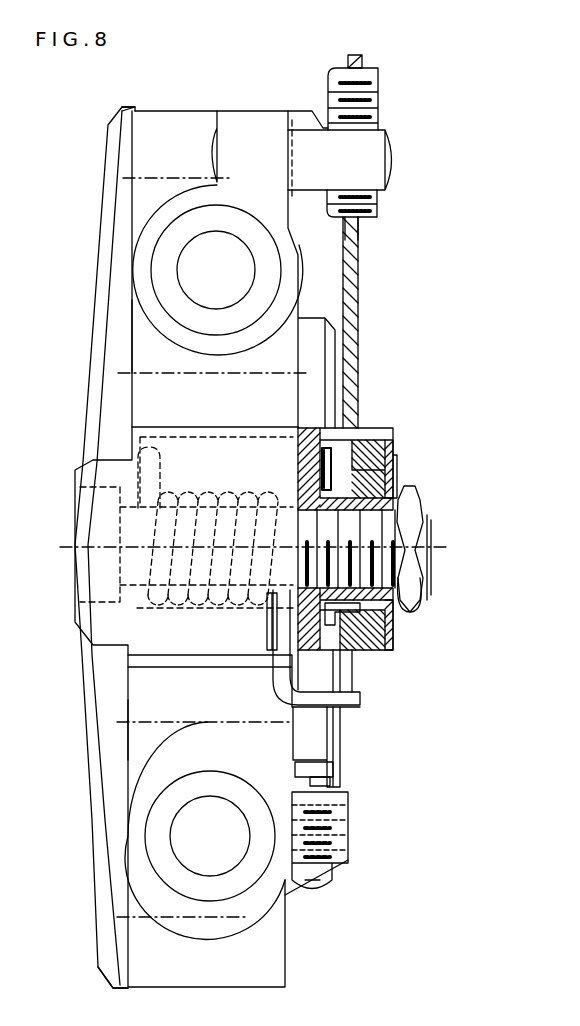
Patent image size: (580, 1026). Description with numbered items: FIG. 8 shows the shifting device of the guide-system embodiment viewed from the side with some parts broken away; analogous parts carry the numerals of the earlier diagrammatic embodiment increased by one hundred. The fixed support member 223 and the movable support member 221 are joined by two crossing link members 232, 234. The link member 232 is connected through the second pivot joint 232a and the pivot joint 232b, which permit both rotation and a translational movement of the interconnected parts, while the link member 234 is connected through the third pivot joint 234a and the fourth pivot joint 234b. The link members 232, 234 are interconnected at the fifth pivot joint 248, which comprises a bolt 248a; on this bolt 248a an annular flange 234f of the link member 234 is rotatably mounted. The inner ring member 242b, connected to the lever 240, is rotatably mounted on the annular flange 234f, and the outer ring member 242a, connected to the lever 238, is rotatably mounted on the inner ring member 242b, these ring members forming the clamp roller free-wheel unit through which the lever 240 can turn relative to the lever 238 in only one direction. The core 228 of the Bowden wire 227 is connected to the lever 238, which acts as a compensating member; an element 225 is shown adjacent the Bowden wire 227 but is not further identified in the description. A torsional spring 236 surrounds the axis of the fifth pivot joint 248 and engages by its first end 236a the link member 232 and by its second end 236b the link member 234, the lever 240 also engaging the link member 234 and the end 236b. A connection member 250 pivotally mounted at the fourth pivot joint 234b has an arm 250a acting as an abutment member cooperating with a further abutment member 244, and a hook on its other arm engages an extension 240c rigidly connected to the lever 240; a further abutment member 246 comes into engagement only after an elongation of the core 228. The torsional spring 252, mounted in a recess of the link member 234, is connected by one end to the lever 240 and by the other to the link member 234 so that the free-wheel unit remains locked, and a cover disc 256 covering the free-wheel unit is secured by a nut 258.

The movable support member 221 is at (200, 830).
The fixed support member 223 is at (202, 272).
The adjusting nut 225 is at (370, 158).
The Bowden wire 227 is at (388, 96).
The core of the Bowden wire 228 is at (360, 62).
The link member 232 is at (105, 348).
The second pivot joint 232a is at (143, 178).
The pivot joint 232b is at (128, 920).
The link member 234 is at (290, 720).
The third pivot joint 234a is at (142, 375).
The fourth pivot joint 234b is at (132, 734).
The annular flange 234f is at (293, 478).
The torsional spring 236 is at (273, 643).
The first end of the torsional spring 236a is at (152, 462).
The second end of the torsional spring 236b is at (358, 697).
The lever 238 is at (370, 428).
The lever 240 is at (345, 676).
The extension of the lever 240c is at (350, 443).
The outer ring member 242a is at (398, 458).
The inner ring member 242b is at (394, 487).
The abutment member 244 is at (330, 778).
The abutment member 246 is at (317, 748).
The fifth pivot joint 248 is at (433, 544).
The bolt 248a is at (378, 563).
The connection member 250 is at (355, 654).
The arm of the connection member 250a is at (335, 775).
The torsional spring 252 is at (302, 432).
The cover disc 256 is at (398, 641).
The nut 258 is at (415, 603).